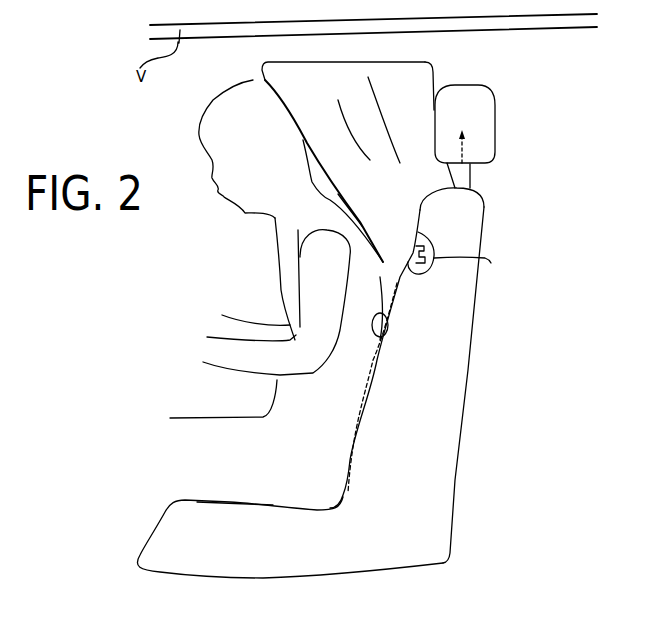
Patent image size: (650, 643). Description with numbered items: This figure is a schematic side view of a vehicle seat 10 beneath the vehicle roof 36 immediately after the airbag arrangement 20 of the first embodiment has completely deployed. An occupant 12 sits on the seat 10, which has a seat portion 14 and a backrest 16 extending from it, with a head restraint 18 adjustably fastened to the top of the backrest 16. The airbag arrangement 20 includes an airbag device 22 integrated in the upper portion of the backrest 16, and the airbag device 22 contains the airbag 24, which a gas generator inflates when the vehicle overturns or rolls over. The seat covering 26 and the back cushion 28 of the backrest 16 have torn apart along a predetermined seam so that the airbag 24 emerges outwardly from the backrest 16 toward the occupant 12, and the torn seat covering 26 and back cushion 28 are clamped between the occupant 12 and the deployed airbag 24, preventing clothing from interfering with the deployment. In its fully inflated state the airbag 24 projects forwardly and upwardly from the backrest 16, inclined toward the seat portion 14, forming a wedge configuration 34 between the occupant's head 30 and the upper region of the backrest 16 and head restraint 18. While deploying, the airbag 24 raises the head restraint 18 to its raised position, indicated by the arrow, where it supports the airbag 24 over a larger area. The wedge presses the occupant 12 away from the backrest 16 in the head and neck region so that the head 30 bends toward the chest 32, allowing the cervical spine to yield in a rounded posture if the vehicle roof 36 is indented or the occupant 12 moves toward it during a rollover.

The vehicle seat 10 is at (343, 351).
The occupant 12 is at (248, 249).
The seat portion 14 is at (276, 556).
The backrest 16 is at (453, 363).
The head restraint 18 is at (478, 121).
The airbag arrangement 20 is at (445, 236).
The airbag device 22 is at (490, 262).
The airbag 24 is at (344, 154).
The seat covering 26 is at (390, 336).
The back cushion 28 is at (400, 270).
The head 30 is at (217, 137).
The chest 32 is at (290, 291).
The wedge configuration 34 is at (278, 76).
The vehicle roof 36 is at (558, 24).